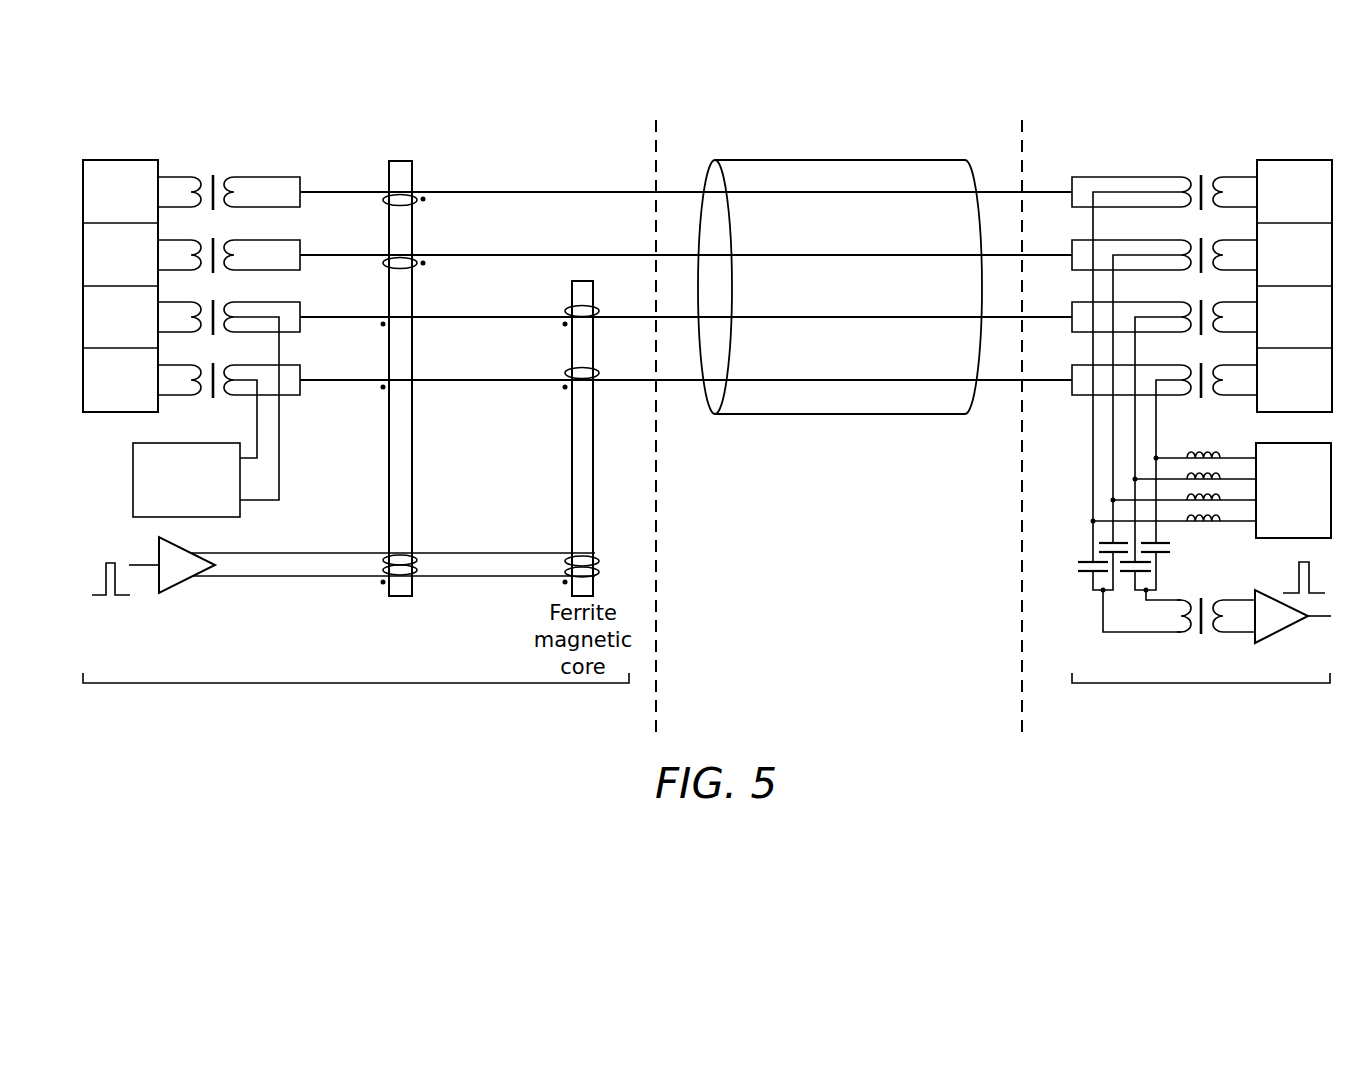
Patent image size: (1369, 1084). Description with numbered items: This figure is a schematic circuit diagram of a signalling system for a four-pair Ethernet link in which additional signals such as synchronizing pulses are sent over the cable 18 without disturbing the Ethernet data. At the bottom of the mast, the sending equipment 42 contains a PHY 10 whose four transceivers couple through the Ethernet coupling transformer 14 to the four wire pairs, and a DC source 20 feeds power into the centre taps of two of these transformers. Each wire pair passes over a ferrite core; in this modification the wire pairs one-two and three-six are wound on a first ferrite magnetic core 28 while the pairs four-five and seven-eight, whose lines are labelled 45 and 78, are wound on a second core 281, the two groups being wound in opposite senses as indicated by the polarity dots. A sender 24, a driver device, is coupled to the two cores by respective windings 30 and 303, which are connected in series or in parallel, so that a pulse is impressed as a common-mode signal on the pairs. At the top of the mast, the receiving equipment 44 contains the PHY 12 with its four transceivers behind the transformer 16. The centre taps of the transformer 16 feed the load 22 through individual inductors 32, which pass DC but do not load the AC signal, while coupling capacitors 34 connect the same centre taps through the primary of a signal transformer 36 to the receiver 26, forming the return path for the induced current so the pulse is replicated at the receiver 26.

The PHY 10 is at (128, 160).
The Ethernet coupling transformer 14 is at (211, 158).
The PHY 12 is at (1309, 132).
The transformer 16 is at (1202, 158).
The cable 18 is at (838, 160).
The source 20 is at (133, 458).
The load 22 is at (1258, 443).
The sender 24 is at (159, 546).
The receiver 26 is at (1300, 628).
The ferrite magnetic core 28 is at (389, 466).
The core 281 is at (572, 466).
The winding 30 is at (413, 572).
The winding 303 is at (596, 560).
The inductors 32 is at (1204, 532).
The coupling capacitors 34 is at (1080, 555).
The signal transformer 36 is at (1192, 636).
The sending equipment 42 is at (352, 724).
The receiving equipment 44 is at (1213, 724).
The wire pair 4-5 45 is at (686, 305).
The wire pair 7-8 78 is at (686, 368).